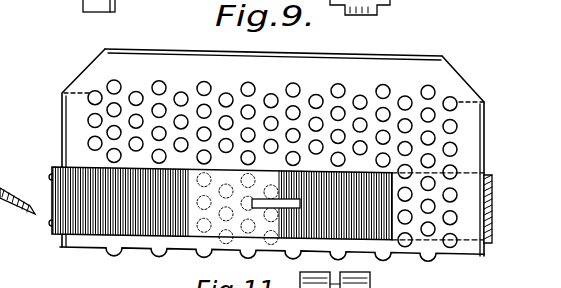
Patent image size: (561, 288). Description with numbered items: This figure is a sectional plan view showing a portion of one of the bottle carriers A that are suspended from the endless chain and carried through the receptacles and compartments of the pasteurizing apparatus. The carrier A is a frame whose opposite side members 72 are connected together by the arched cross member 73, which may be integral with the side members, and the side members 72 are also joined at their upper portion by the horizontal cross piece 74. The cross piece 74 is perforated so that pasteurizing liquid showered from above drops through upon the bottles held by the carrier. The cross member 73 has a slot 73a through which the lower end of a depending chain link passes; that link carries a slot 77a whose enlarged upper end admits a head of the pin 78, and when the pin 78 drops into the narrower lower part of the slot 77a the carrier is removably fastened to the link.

The carrier A is at (272, 149).
The horizontal cross piece 74 is at (379, 68).
The arched cross member 73 is at (180, 232).
The slot 73a is at (262, 208).
The side members 72 is at (50, 233).
The slot 77a is at (0, 173).
The pin 78 is at (17, 216).